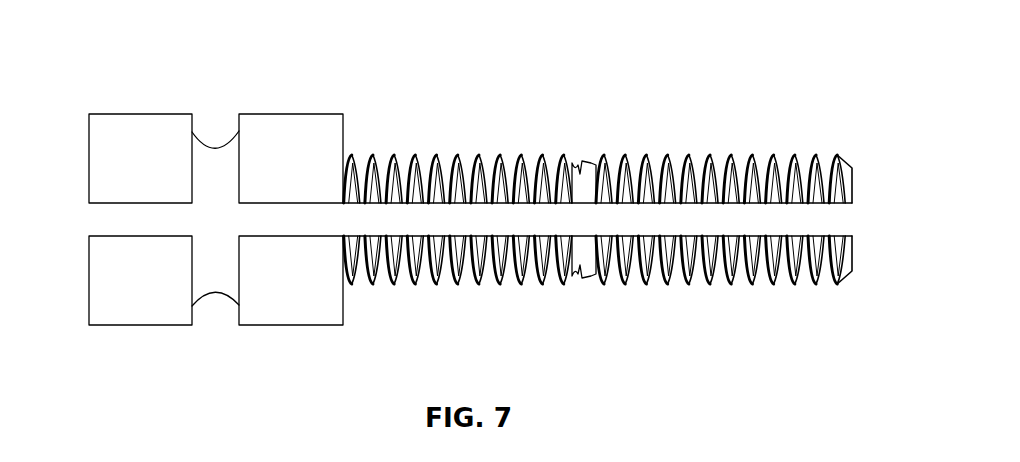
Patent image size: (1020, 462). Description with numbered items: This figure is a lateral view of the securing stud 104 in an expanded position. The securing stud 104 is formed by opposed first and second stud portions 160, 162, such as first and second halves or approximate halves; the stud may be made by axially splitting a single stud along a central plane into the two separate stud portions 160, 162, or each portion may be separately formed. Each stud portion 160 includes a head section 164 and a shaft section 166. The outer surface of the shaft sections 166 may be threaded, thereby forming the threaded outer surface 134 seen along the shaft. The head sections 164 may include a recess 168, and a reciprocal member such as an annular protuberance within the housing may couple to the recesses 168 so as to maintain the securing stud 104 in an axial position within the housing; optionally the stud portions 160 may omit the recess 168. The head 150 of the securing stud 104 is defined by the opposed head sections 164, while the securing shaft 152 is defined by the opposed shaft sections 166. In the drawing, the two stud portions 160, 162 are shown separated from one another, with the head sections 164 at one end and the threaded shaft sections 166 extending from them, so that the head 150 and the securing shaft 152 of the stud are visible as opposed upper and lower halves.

The securing stud 104 is at (118, 45).
The threaded outer surface 134 is at (436, 155).
The head 150 is at (78, 114).
The securing shaft 152 is at (858, 156).
The first stud portion 160 is at (137, 325).
The second stud portion 162 is at (265, 114).
The head section 164 is at (137, 114).
The shaft section 166 is at (497, 155).
The recess 168 is at (218, 147).